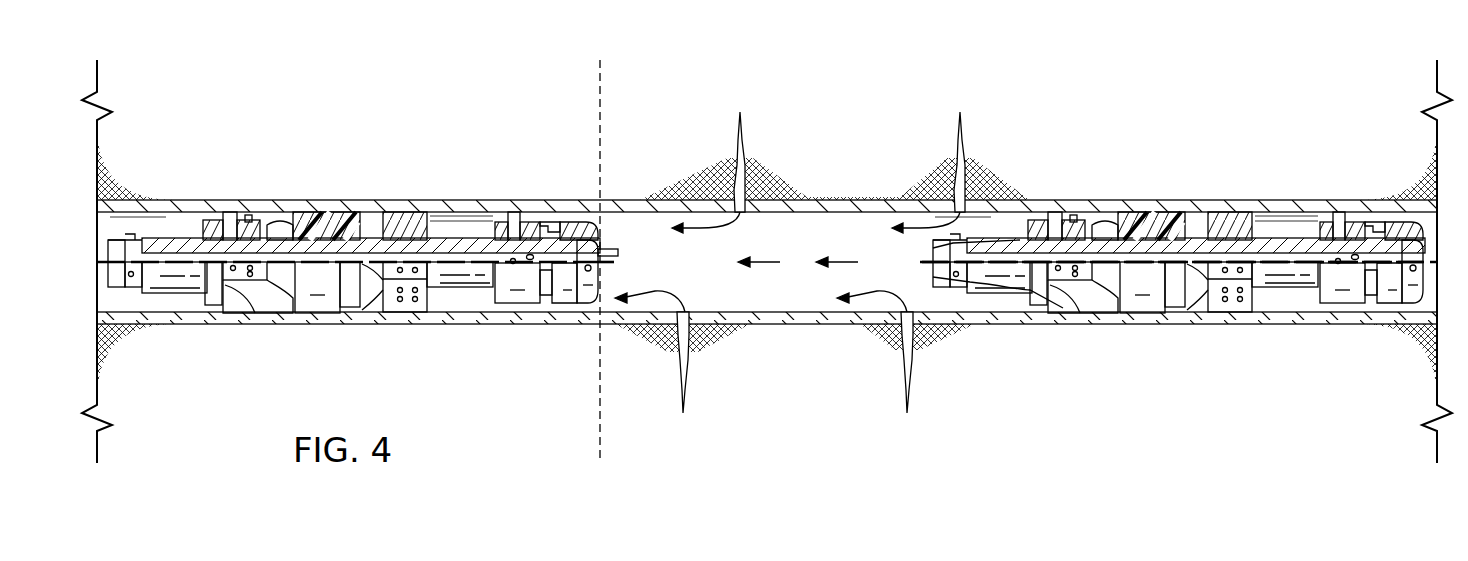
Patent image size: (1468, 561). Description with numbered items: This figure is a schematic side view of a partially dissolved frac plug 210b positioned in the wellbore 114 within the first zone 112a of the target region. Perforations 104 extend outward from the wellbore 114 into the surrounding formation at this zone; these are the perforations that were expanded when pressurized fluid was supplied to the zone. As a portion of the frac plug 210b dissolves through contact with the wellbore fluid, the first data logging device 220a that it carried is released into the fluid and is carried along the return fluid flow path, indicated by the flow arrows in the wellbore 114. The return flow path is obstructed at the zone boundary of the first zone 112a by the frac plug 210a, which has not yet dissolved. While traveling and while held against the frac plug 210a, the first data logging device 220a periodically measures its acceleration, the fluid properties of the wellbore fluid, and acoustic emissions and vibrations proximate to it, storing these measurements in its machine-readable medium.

The first zone 112a is at (1113, 117).
The wellbore 114 is at (824, 318).
The perforations 104 is at (745, 143).
The frac plug 210a is at (320, 211).
The partially dissolved frac plug 210b is at (1148, 211).
The first data logging device 220a is at (622, 257).